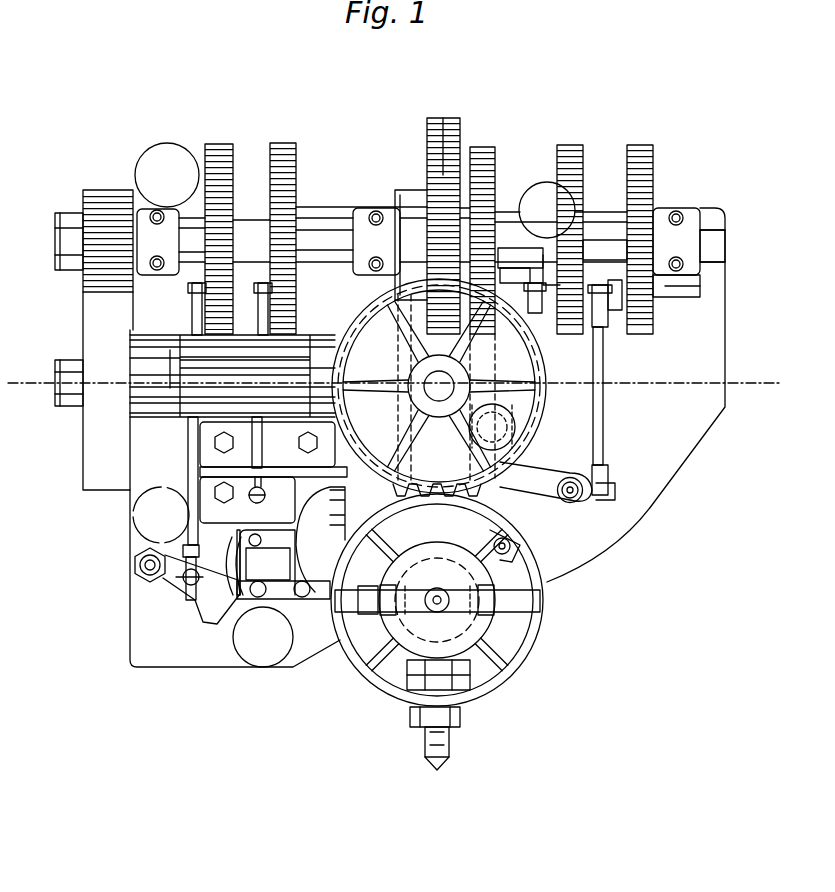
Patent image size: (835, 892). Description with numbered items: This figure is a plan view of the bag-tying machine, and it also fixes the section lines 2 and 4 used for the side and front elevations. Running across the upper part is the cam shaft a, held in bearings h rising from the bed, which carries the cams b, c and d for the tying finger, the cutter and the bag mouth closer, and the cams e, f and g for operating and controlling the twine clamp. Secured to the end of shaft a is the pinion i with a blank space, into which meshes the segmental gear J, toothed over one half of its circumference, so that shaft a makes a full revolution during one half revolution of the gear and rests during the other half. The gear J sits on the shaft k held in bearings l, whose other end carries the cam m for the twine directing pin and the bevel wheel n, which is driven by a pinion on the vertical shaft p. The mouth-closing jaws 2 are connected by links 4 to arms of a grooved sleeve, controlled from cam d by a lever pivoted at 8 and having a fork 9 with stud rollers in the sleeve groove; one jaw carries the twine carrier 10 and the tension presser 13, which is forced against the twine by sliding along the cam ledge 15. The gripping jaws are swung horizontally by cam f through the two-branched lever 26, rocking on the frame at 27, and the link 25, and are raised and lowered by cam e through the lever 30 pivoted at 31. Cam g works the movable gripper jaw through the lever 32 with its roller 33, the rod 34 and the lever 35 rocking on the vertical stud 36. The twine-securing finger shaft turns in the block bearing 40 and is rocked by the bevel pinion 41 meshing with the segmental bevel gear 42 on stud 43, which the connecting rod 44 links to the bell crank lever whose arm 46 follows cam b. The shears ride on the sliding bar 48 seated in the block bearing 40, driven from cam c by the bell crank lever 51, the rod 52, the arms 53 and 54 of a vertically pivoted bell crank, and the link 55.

The jaws 2 is at (437, 98).
The links 4 is at (394, 387).
The pivot 8 is at (372, 338).
The fork 9 is at (427, 540).
The twine carrier 10 is at (447, 753).
The tension presser 13 is at (450, 735).
The cam ledge 15 is at (367, 623).
The link 25 is at (537, 407).
The two branched lever 26 is at (540, 298).
The rocking connection 27 is at (692, 297).
The lever 30 is at (524, 298).
The pivot 31 is at (543, 245).
The lever 32 is at (612, 277).
The roller 33 is at (617, 327).
The rod 34 is at (603, 400).
The lever 35 is at (546, 489).
The vertical stud 36 is at (570, 501).
The block bearing 40 is at (228, 612).
The bevel pinion 41 is at (240, 548).
The segmental bevel gear 42 is at (208, 622).
The stud 43 is at (134, 573).
The connecting rod 44 is at (191, 463).
The bell crank lever arm 46 is at (192, 311).
The sliding bar 48 is at (296, 572).
The bell crank lever 51 is at (266, 316).
The rod 52 is at (255, 413).
The bell crank lever arm 53 is at (273, 490).
The bell crank lever arm 54 is at (313, 600).
The link 55 is at (257, 572).
The shaft a is at (55, 238).
The cam b is at (219, 145).
The cam c is at (283, 144).
The cam d is at (446, 108).
The cam e is at (483, 147).
The cam f is at (570, 145).
The cam g is at (641, 145).
The bearings h is at (141, 212).
The pinion i is at (95, 193).
The segmental gear J is at (92, 345).
The shaft k is at (54, 395).
The bearings l is at (232, 389).
The cam m is at (388, 352).
The bevel wheel n is at (405, 482).
The vertical shaft p is at (439, 387).